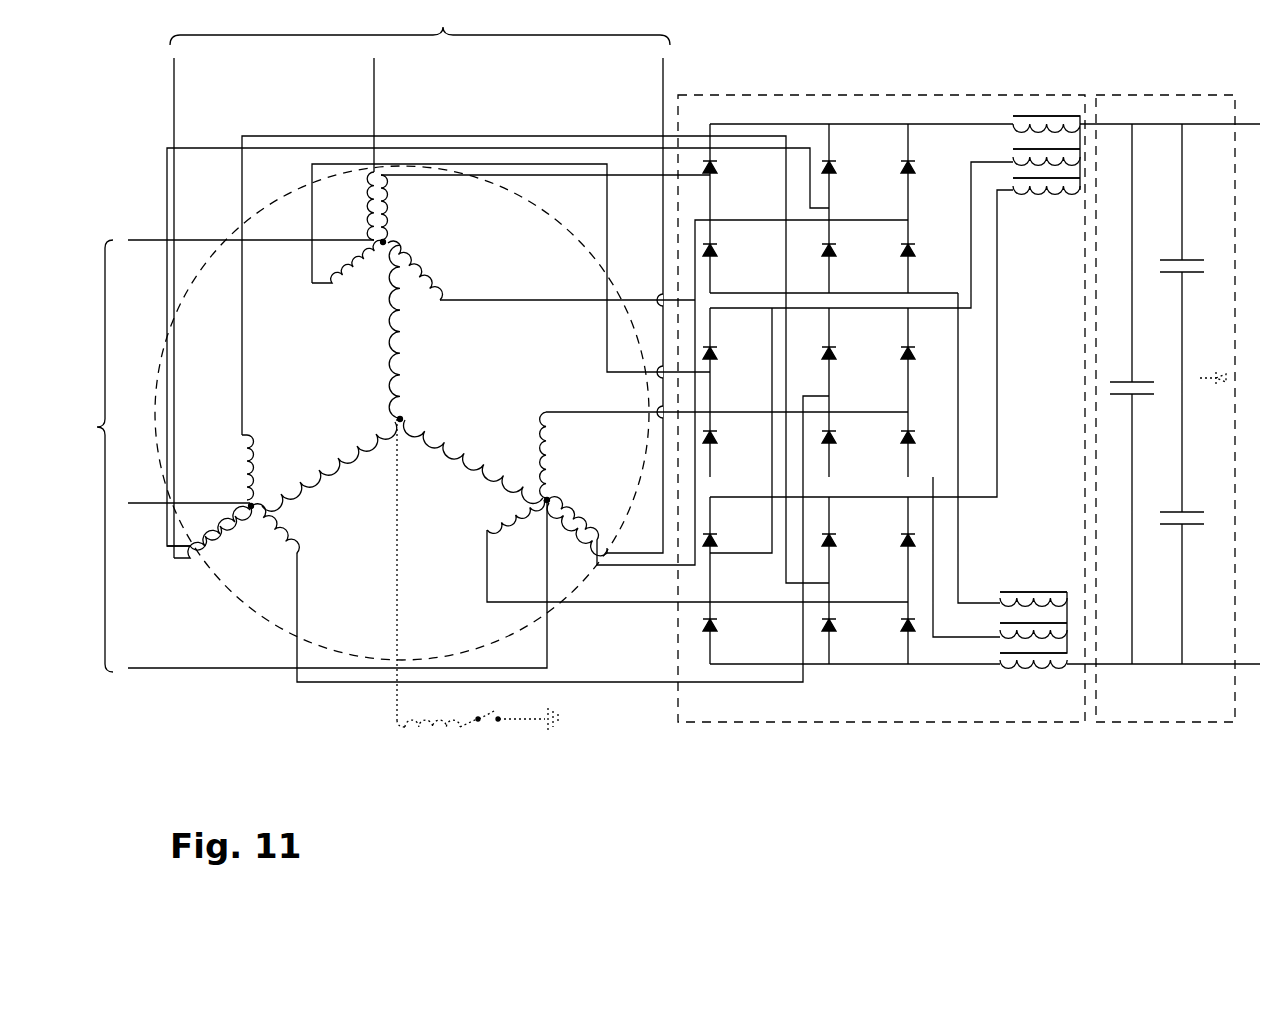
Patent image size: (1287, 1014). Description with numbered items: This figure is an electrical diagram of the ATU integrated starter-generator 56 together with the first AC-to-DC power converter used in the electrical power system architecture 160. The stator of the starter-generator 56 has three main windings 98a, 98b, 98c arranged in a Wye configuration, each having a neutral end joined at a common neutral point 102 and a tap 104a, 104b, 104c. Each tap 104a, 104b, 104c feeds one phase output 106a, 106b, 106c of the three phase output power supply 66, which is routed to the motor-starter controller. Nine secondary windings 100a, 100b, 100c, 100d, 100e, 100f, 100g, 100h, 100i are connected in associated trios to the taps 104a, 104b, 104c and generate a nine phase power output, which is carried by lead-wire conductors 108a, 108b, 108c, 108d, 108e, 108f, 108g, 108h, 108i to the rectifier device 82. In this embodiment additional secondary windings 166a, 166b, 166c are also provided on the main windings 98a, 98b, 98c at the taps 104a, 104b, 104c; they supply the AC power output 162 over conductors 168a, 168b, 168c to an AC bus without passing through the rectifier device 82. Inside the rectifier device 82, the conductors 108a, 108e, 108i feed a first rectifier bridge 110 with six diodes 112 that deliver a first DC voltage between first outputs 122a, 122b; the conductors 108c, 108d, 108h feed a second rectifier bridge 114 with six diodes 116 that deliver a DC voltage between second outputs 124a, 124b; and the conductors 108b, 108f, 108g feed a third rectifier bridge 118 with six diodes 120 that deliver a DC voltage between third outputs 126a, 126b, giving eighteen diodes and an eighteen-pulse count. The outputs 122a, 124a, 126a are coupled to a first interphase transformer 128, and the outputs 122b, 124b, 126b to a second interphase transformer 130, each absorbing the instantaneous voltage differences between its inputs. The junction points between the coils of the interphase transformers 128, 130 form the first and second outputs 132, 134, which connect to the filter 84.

The AC power output 162 is at (420, 28).
The three phase output power supply 66 is at (95, 456).
The ATU integrated starter-generator 56 is at (157, 362).
The common neutral point 102 is at (430, 423).
The main winding 98a is at (405, 320).
The main winding 98b is at (462, 463).
The main winding 98c is at (340, 450).
The tap 104a is at (393, 240).
The tap 104b is at (545, 508).
The tap 104c is at (251, 512).
The secondary winding 100a is at (388, 202).
The secondary winding 100b is at (434, 274).
The secondary winding 100c is at (347, 273).
The secondary winding 100d is at (576, 492).
The secondary winding 100e is at (487, 526).
The secondary winding 100f is at (540, 443).
The secondary winding 100g is at (220, 550).
The secondary winding 100h is at (243, 458).
The secondary winding 100i is at (292, 536).
The additional secondary winding 166a is at (368, 204).
The additional secondary winding 166b is at (594, 516).
The additional secondary winding 166c is at (210, 548).
The conductor 168a is at (374, 98).
The conductor 168b is at (663, 76).
The conductor 168c is at (174, 95).
The phase output 106a is at (150, 240).
The phase output 106b is at (154, 668).
The phase output 106c is at (168, 503).
The conductor 108a is at (625, 175).
The conductor 108b is at (522, 300).
The conductor 108c is at (550, 164).
The conductor 108d is at (576, 412).
The conductor 108e is at (615, 565).
The conductor 108f is at (600, 602).
The conductor 108g is at (408, 136).
The conductor 108h is at (600, 682).
The conductor 108i is at (462, 148).
The rectifier device 82 is at (741, 94).
The filter 84 is at (1216, 96).
The first rectifier bridge 110 is at (802, 124).
The diode 112 is at (715, 170).
The second rectifier bridge 114 is at (905, 302).
The diode 116 is at (714, 358).
The electrical power system architecture 160 is at (834, 355).
The third rectifier bridge 118 is at (829, 667).
The diode 120 is at (715, 541).
The first output 122a is at (960, 134).
The first output 122b is at (995, 650).
The second output 124a is at (975, 158).
The second output 124b is at (987, 635).
The third output 126a is at (1011, 159).
The third output 126b is at (950, 665).
The first interphase transformer 128 is at (1060, 114).
The second interphase transformer 130 is at (1037, 665).
The first output 132 is at (1095, 124).
The second output 134 is at (1095, 666).